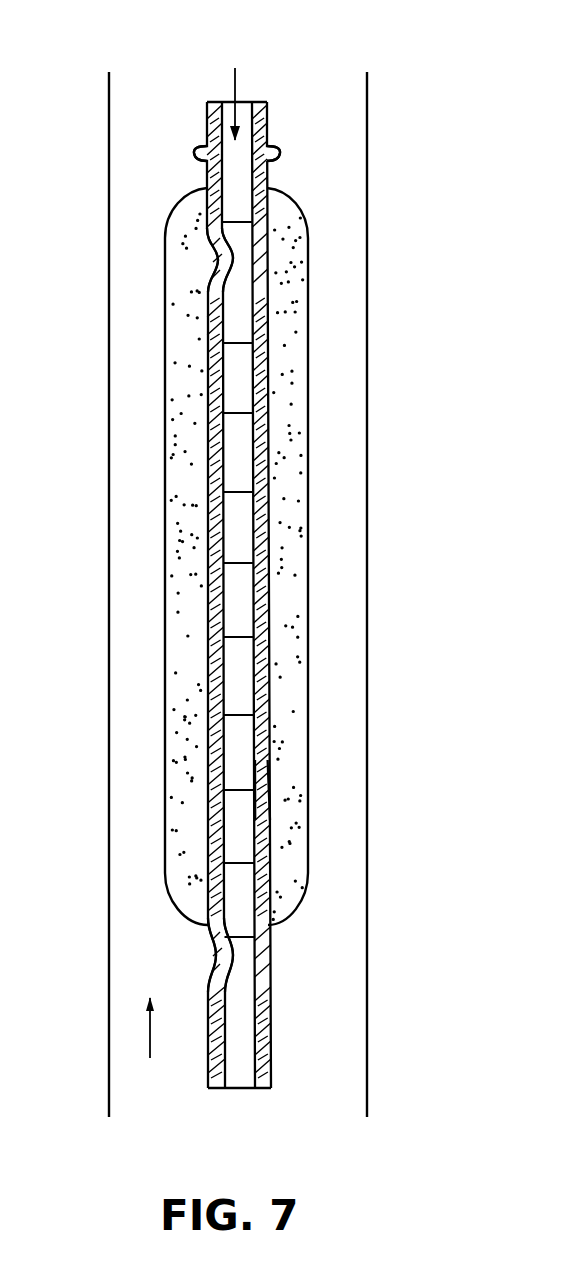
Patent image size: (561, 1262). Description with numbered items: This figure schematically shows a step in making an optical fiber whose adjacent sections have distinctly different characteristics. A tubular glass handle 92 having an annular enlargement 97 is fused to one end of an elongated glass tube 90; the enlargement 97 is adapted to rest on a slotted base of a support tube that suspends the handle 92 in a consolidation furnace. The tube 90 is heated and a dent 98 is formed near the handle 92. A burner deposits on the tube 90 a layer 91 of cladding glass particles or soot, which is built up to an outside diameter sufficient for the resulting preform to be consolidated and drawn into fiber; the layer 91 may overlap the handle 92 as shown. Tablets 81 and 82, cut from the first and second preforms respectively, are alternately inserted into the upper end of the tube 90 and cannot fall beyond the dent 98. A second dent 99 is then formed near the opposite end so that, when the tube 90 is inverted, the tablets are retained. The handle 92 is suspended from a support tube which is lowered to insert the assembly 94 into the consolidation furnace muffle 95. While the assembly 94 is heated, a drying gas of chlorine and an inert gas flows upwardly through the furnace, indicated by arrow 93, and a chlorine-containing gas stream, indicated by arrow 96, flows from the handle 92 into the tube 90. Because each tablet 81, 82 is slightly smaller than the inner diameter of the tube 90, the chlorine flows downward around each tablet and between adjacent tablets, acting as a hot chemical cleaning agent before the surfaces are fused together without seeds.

The tablet 81 is at (247, 510).
The tablet 82 is at (237, 588).
The elongated glass tube 90 is at (263, 790).
The layer of cladding glass particles 91 is at (297, 688).
The tubular glass handle 92 is at (260, 178).
The drying gas flow arrow 93 is at (150, 1037).
The assembly 94 is at (310, 632).
The consolidation furnace muffle 95 is at (367, 905).
The chlorine-containing gas stream arrow 96 is at (237, 80).
The annular enlargement 97 is at (279, 148).
The dent 98 is at (217, 260).
The dent 99 is at (217, 957).